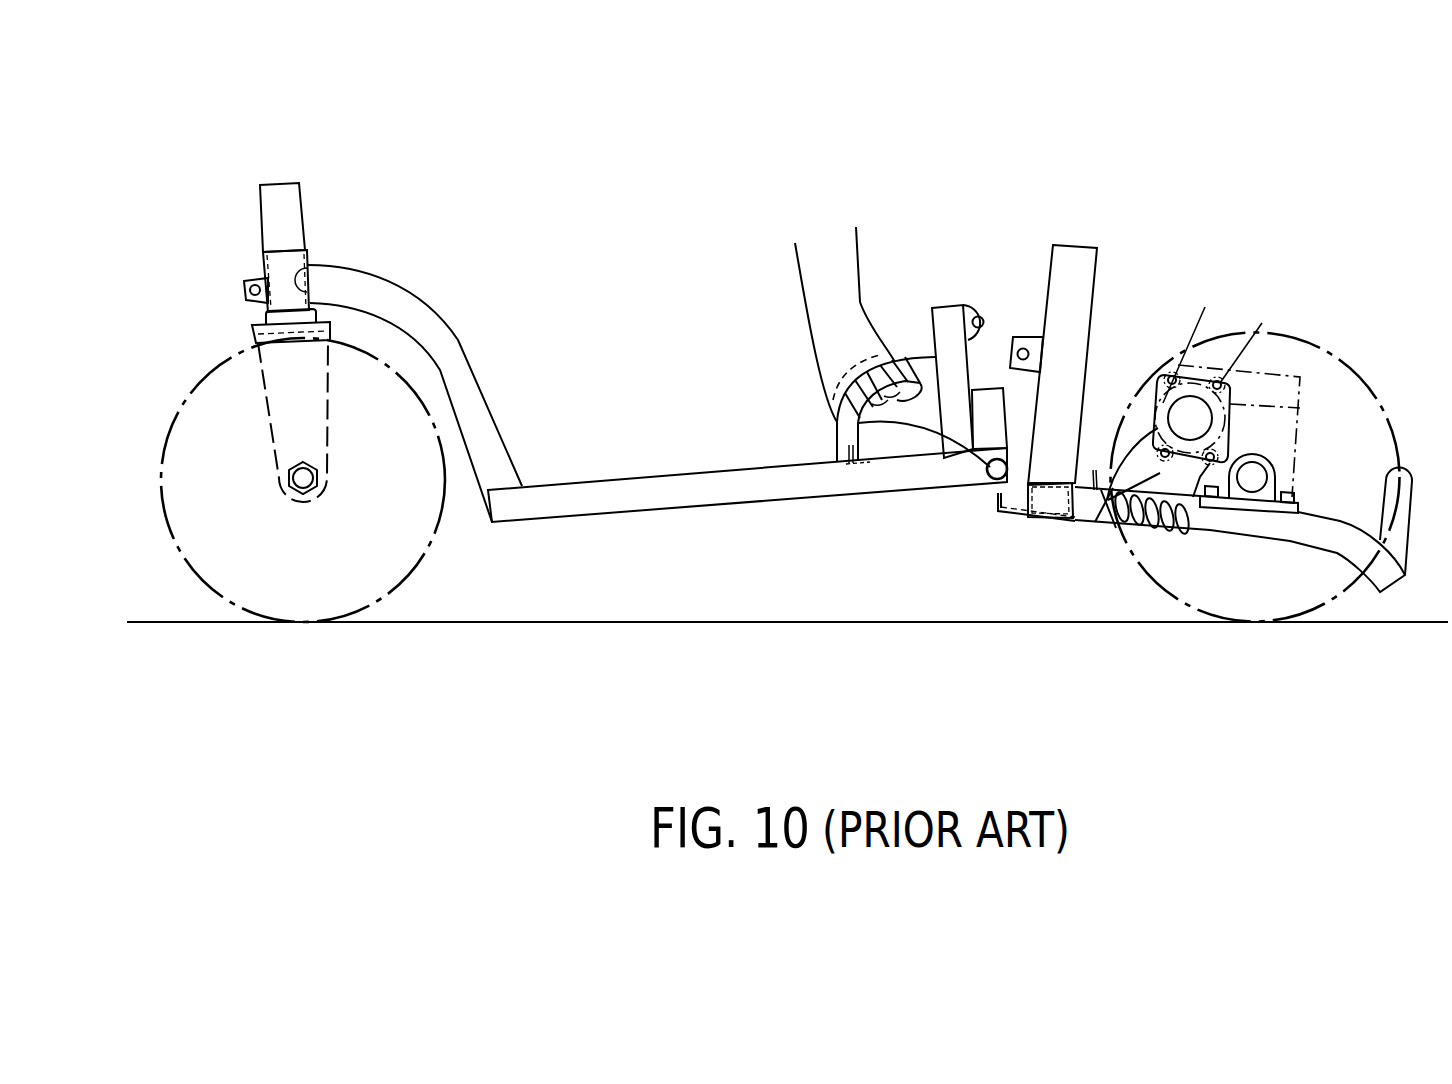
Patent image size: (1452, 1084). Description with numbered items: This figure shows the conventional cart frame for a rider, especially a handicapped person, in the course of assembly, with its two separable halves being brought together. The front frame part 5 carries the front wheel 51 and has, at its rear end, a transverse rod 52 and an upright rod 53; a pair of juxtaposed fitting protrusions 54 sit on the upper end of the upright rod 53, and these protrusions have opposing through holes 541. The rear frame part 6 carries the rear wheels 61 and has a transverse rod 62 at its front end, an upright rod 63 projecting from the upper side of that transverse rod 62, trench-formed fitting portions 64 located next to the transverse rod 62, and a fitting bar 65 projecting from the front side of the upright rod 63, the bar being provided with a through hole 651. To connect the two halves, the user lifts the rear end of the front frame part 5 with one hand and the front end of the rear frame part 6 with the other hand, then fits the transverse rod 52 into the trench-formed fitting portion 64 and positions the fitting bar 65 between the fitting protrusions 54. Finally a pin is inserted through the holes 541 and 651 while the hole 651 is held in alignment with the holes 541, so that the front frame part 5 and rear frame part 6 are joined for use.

The front frame part 5 is at (641, 312).
The front wheel 51 is at (380, 378).
The transverse rod 52 is at (836, 424).
The upright rod 53 is at (950, 350).
The fitting protrusions 54 is at (925, 299).
The through holes 541 is at (987, 312).
The rear frame part 6 is at (1243, 393).
The rear wheels 61 is at (1352, 388).
The transverse rod 62 is at (1052, 492).
The upright rod 63 is at (1077, 277).
The trench-formed fitting portions 64 is at (997, 511).
The fitting bar 65 is at (1094, 273).
The through hole 651 is at (1028, 352).